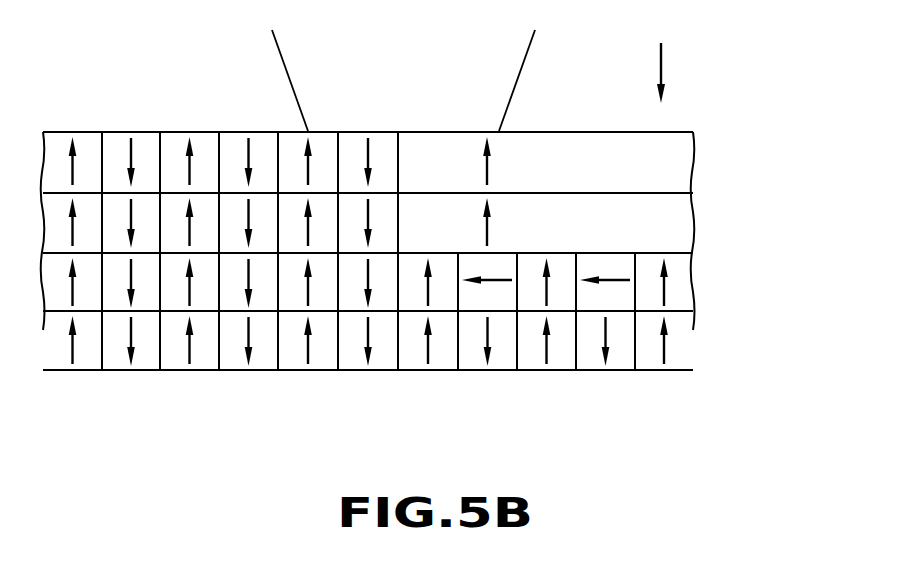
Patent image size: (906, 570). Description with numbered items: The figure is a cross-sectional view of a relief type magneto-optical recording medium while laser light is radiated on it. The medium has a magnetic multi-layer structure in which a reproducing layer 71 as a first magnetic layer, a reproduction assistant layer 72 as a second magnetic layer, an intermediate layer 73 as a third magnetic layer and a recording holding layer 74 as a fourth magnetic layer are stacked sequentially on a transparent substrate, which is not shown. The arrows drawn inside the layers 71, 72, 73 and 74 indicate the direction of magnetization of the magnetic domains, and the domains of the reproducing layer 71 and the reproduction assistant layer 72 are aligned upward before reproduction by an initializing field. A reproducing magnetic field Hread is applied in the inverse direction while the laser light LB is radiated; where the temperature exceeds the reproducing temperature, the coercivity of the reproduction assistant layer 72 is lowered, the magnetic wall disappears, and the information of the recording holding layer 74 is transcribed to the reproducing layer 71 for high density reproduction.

The reproducing layer 71 is at (682, 170).
The reproduction assistant layer 72 is at (682, 229).
The intermediate layer 73 is at (683, 288).
The recording holding layer 74 is at (683, 348).
The laser light LB is at (523, 68).
The reproducing magnetic field Hread is at (701, 73).